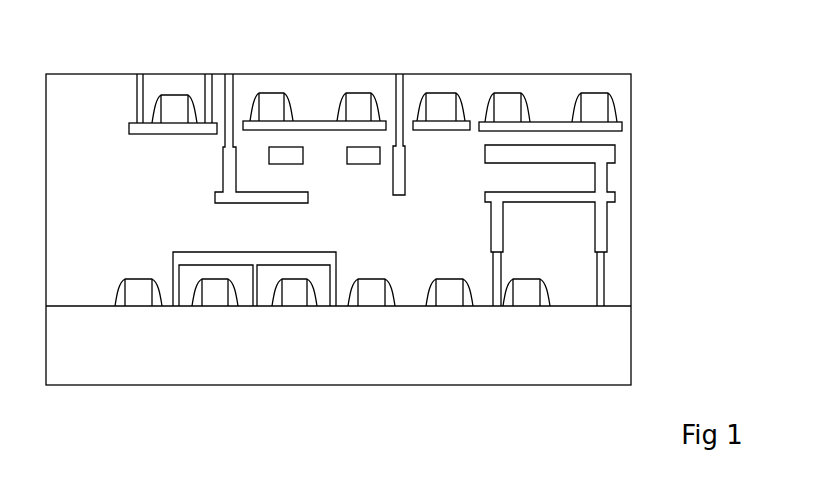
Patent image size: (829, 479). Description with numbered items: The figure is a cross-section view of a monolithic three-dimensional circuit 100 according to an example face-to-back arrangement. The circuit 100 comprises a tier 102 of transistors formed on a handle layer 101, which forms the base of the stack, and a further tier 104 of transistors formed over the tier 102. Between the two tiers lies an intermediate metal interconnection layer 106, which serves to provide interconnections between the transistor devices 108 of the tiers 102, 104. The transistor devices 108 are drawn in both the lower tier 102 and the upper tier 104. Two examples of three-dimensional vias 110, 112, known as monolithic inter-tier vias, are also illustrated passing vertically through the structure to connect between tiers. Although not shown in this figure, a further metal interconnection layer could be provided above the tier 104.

The monolithic 3D circuit 100 is at (652, 63).
The handle layer 101 is at (612, 347).
The tier 102 is at (648, 253).
The further tier 104 is at (648, 75).
The intermediate metal interconnection layer 106 is at (648, 148).
The transistor devices 108 is at (358, 101).
The 3D via 110 is at (229, 175).
The 3D via 112 is at (401, 172).